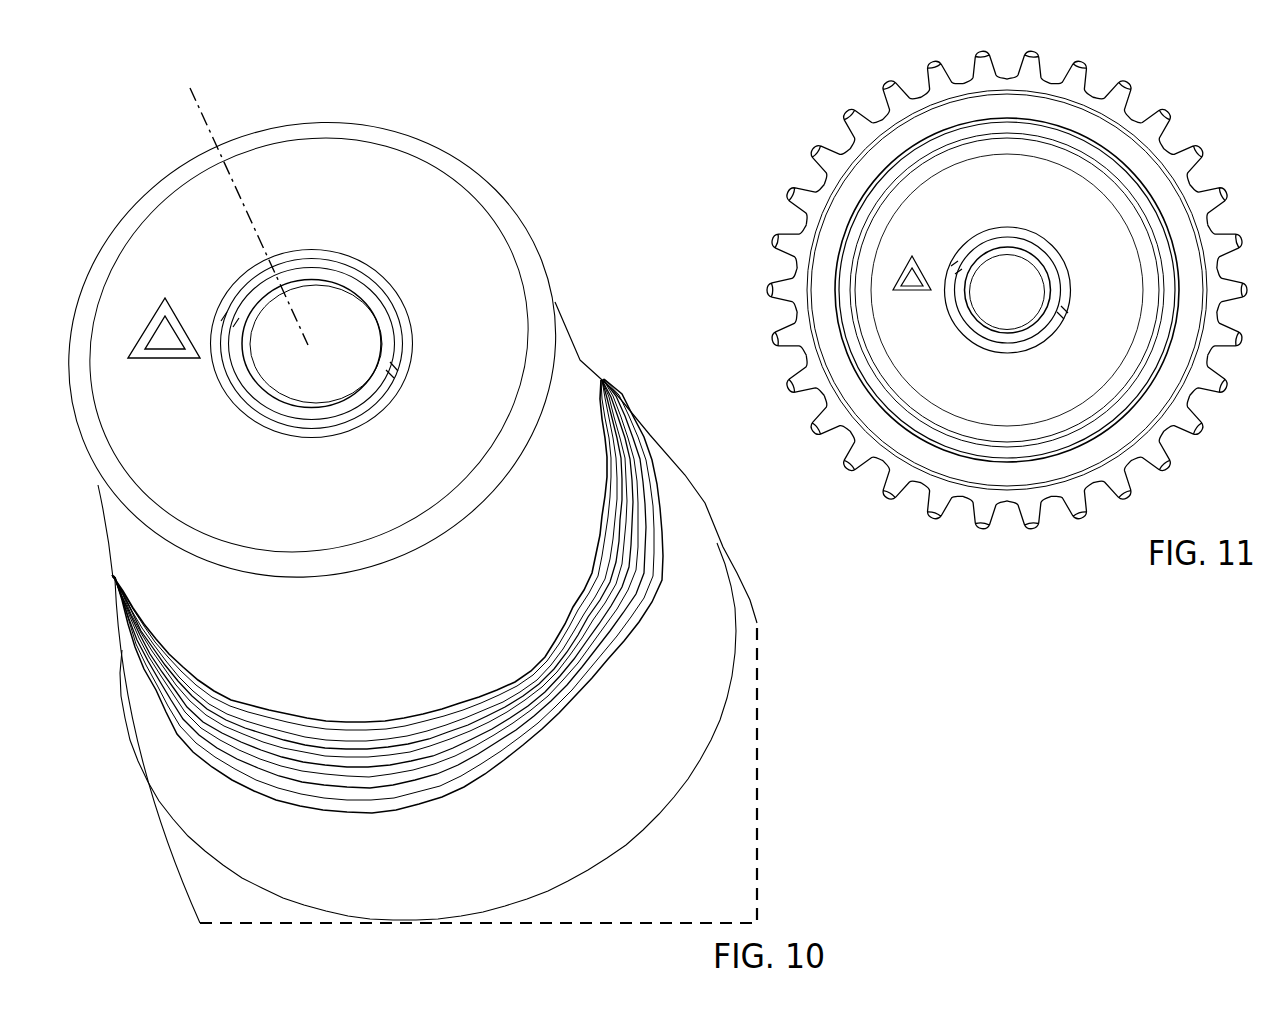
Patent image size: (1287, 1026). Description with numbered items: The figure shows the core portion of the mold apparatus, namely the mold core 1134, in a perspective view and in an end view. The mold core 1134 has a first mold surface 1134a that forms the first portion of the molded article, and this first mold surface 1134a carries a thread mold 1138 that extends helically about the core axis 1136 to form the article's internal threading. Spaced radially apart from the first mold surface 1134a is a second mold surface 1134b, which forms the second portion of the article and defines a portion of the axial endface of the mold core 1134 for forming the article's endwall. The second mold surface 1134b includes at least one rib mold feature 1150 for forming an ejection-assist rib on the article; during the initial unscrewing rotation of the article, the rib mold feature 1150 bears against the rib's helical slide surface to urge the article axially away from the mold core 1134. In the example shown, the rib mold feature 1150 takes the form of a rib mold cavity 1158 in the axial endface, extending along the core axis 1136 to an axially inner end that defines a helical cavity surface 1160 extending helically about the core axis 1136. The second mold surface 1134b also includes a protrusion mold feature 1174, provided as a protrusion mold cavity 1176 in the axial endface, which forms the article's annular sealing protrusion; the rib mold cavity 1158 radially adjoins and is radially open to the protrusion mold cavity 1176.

In FIG. 10, the mold core 1134 is at (379, 487).
In FIG. 11, the mold core 1134 is at (991, 290).
In FIG. 10, the first mold surface 1134a is at (157, 603).
In FIG. 10, the second mold surface 1134b is at (295, 240).
In FIG. 10, the core axis 1136 is at (203, 107).
In FIG. 10, the thread mold 1138 is at (155, 658).
In FIG. 10, the rib mold feature 1150 is at (340, 324).
In FIG. 11, the rib mold feature 1150 is at (996, 232).
In FIG. 10, the rib mold cavity 1158 is at (372, 285).
In FIG. 10, the helical cavity surface 1160 is at (398, 317).
In FIG. 11, the helical cavity surface 1160 is at (1012, 233).
In FIG. 10, the protrusion mold feature 1174 is at (326, 299).
In FIG. 10, the protrusion mold cavity 1176 is at (338, 285).